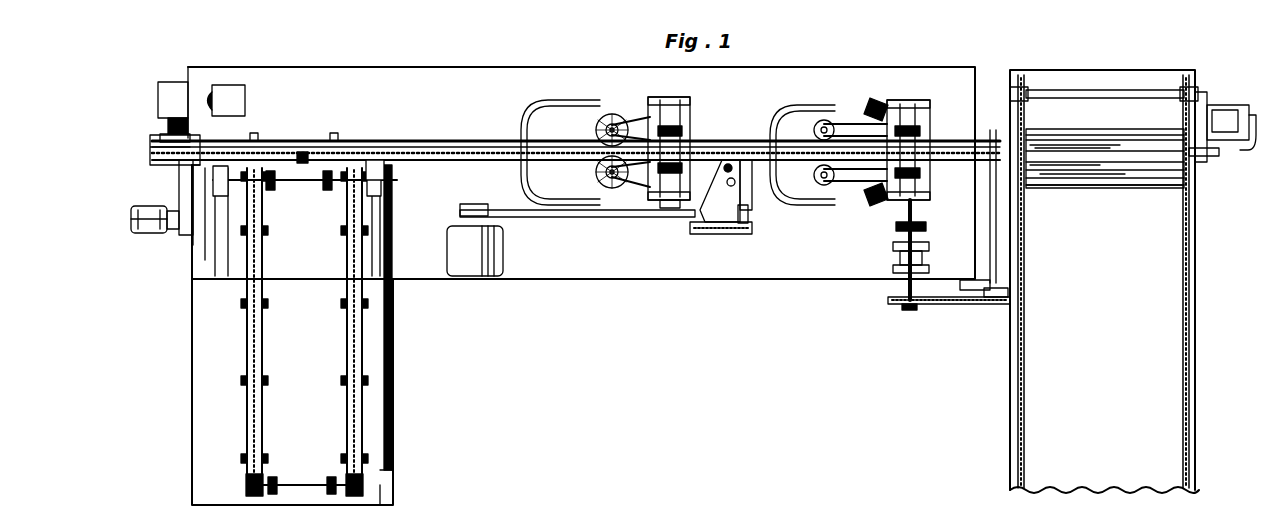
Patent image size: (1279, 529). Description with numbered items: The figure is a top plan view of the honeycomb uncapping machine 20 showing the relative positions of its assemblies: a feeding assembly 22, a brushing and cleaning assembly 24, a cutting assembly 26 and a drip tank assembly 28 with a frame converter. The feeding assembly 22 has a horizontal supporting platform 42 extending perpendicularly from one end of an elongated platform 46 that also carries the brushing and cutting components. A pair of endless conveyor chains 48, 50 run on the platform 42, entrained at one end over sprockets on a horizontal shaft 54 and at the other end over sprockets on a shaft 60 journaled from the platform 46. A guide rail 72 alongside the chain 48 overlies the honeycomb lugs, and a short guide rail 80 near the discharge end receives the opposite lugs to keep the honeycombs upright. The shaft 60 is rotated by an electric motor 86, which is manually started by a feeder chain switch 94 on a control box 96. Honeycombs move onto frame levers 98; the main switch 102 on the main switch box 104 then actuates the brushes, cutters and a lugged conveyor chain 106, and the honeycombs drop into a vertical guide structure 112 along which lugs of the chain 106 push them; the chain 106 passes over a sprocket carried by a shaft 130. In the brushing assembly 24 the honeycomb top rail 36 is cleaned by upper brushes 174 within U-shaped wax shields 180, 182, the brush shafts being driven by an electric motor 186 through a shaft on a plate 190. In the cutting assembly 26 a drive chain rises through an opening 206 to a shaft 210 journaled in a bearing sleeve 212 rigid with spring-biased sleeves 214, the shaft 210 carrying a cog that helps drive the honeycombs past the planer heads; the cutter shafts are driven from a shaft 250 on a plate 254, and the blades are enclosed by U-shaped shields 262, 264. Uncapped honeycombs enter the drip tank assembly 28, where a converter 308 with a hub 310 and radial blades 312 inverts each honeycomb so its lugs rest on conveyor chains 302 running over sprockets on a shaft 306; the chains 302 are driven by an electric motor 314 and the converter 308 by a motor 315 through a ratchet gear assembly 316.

The machine 20 is at (556, 283).
The feeding assembly 22 is at (190, 377).
The brushing and cleaning assembly 24 is at (541, 96).
The cutting assembly 26 is at (860, 232).
The drip tank assembly 28 is at (1004, 373).
The top rail 36 is at (950, 306).
The supporting platform 42 is at (388, 490).
The elongated platform 46 is at (430, 76).
The endless conveyor chain 48 is at (345, 360).
The endless conveyor chain 50 is at (258, 361).
The horizontal shaft 54 is at (300, 490).
The horizontal shaft 60 is at (303, 186).
The guide rail 72 is at (396, 414).
The guide rail 80 is at (209, 246).
The electric motor 86 is at (134, 229).
The manual feeder chain switch 94 is at (207, 95).
The control box 96 is at (233, 85).
The frame levers 98 is at (372, 160).
The main switch 102 is at (166, 126).
The main switch box 104 is at (170, 82).
The conveyor chain 106 is at (440, 140).
The vertical guide structure 112 is at (279, 139).
The shaft 130 is at (988, 197).
The upper brush 174 is at (600, 114).
The wax shield 180 is at (581, 100).
The wax shield 182 is at (559, 219).
The electric motor 186 is at (477, 246).
The plate 190 is at (690, 111).
The opening 206 is at (718, 236).
The shaft 210 is at (742, 232).
The bearing sleeve 212 is at (752, 200).
The vertically disposed sleeves 214 is at (698, 218).
The shaft 250 is at (928, 135).
The plate 254 is at (912, 93).
The U-shaped shield 262 is at (783, 110).
The U-shaped shield 264 is at (822, 210).
The conveyor chains 302 is at (1026, 300).
The shaft 306 is at (1076, 93).
The converter assembly 308 is at (1160, 186).
The hub 310 is at (1056, 151).
The blades 312 is at (1104, 178).
The electric motor 314 is at (1256, 128).
The motor 315 is at (1226, 106).
The ratchet gear assembly 316 is at (1206, 163).